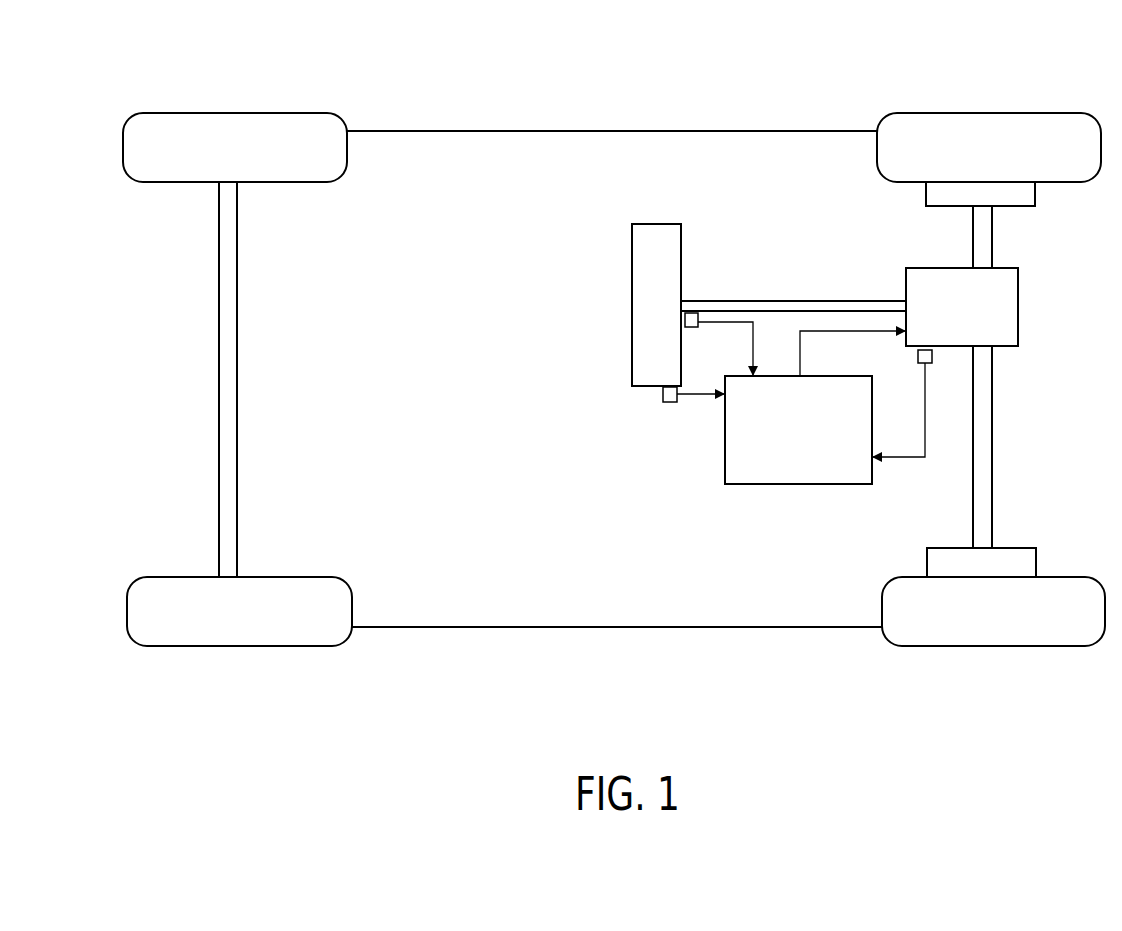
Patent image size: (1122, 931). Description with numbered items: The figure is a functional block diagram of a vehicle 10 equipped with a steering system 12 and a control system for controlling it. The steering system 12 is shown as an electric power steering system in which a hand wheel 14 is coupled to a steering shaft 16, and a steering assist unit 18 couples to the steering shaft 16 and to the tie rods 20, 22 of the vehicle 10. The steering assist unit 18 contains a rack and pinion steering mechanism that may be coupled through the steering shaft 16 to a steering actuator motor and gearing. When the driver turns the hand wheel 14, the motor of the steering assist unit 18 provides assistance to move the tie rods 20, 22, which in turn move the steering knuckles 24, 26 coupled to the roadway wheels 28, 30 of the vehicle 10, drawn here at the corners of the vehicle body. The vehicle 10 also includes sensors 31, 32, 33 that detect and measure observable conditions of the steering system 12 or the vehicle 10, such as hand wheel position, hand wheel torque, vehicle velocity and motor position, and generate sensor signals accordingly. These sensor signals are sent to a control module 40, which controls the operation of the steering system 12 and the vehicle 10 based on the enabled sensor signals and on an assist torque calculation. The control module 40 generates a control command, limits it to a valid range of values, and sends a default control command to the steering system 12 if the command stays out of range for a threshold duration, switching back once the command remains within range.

The vehicle 10 is at (654, 36).
The steering system 12 is at (762, 202).
The hand wheel 14 is at (652, 223).
The steering shaft 16 is at (765, 300).
The steering assist unit 18 is at (1019, 306).
The tie rod 20 is at (993, 250).
The tie rod 22 is at (993, 420).
The steering knuckle 24 is at (926, 186).
The steering knuckle 26 is at (957, 547).
The roadway wheel 28 is at (1027, 112).
The roadway wheel 30 is at (1045, 576).
The sensor 31 is at (690, 330).
The sensor 32 is at (934, 357).
The sensor 33 is at (671, 404).
The control module 40 is at (818, 376).